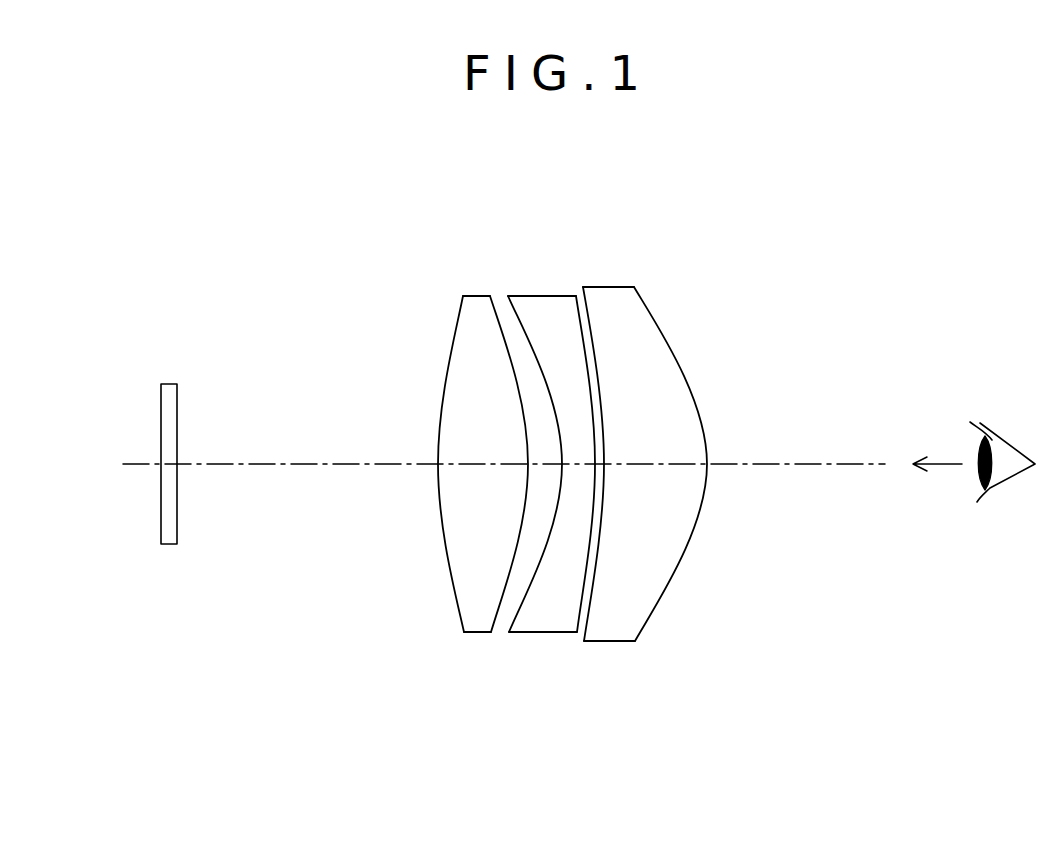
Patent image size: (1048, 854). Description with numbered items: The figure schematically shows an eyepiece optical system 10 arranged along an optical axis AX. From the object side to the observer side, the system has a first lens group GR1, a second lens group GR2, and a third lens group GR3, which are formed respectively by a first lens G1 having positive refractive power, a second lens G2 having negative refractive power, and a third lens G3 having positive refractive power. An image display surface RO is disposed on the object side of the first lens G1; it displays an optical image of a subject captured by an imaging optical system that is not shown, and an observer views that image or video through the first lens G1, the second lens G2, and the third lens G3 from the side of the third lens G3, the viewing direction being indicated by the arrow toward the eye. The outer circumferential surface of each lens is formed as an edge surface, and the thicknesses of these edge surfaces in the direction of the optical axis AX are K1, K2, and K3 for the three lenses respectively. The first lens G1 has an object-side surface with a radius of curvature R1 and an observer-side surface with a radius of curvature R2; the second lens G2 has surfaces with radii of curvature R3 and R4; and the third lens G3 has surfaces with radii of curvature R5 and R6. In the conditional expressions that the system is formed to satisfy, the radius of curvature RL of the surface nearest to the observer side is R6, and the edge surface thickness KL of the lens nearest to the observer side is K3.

The eyepiece optical system 10 is at (288, 254).
The first lens G1 is at (487, 296).
The first lens group GR1 is at (453, 485).
The thickness of the edge surface of the first lens K1 is at (477, 296).
The second lens G2 is at (565, 296).
The second lens group GR2 is at (555, 480).
The thickness of the edge surface of the second lens K2 is at (550, 296).
The third lens G3 is at (597, 289).
The third lens group GR3 is at (668, 467).
The thickness of the edge surface of the third lens K3 is at (606, 287).
The thickness of the edge surface of the lens nearest to the observer side KL is at (668, 493).
The radius of curvature of the object-side surface of the first lens R1 is at (463, 600).
The radius of curvature of the observer-side surface of the first lens R2 is at (499, 608).
The radius of curvature of the object-side surface of the second lens R3 is at (524, 582).
The radius of curvature of the observer-side surface of the second lens R4 is at (588, 580).
The radius of curvature of the object-side surface of the third lens R5 is at (598, 548).
The radius of curvature of the observer-side surface of the third lens R6 is at (645, 617).
The radius of curvature of the surface nearest to the observer side RL is at (670, 464).
The image display surface RO is at (178, 510).
The optical axis AX is at (143, 466).